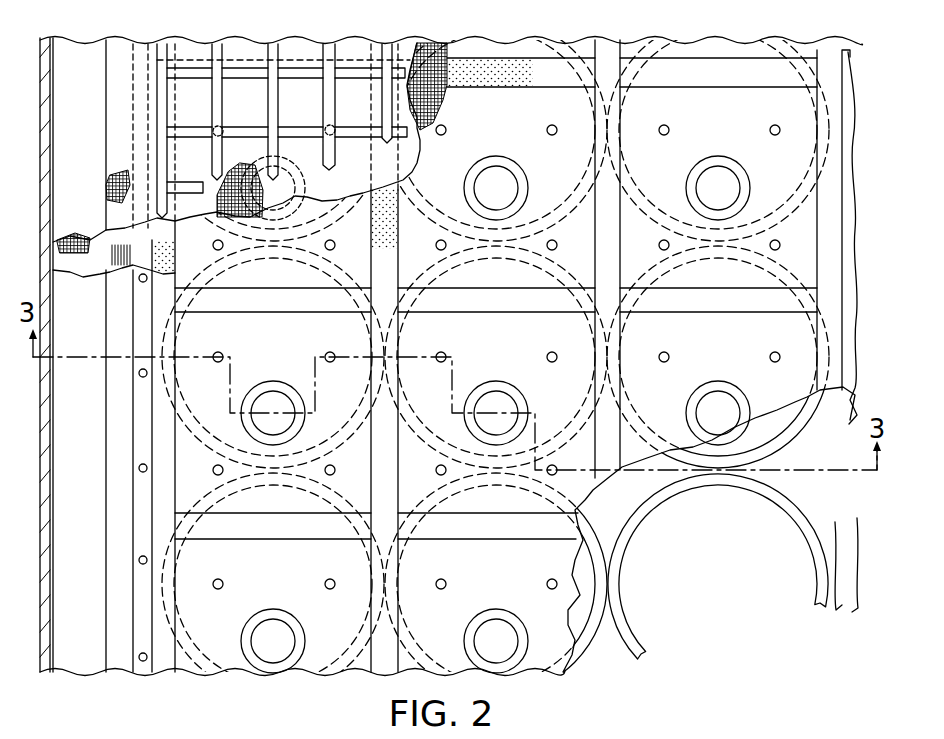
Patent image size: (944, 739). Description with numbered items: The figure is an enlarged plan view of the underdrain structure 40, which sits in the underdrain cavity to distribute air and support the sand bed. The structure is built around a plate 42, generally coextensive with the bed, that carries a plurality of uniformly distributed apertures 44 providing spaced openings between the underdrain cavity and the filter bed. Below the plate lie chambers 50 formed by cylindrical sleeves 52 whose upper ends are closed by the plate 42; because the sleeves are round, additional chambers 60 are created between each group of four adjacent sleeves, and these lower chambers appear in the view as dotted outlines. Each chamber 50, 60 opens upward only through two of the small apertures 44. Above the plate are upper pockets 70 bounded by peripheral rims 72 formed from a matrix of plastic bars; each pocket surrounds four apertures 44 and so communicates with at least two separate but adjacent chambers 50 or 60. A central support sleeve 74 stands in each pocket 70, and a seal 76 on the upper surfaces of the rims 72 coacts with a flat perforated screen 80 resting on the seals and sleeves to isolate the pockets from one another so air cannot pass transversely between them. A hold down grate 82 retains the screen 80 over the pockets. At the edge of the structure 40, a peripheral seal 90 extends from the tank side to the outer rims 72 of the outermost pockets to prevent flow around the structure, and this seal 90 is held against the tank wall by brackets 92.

The underdrain structure 40 is at (867, 93).
The plate 42 is at (625, 45).
The apertures 44 is at (222, 128).
The chambers 50 is at (790, 50).
The sleeves 52 is at (430, 187).
The additional chambers 60 is at (357, 288).
The upper pockets 70 is at (558, 110).
The peripheral rims 72 is at (303, 60).
The central support sleeve 74 is at (525, 183).
The seal 76 is at (497, 77).
The screen 80 is at (418, 48).
The hold down grate 82 is at (218, 46).
The peripheral seal 90 is at (60, 275).
The brackets 92 is at (67, 200).